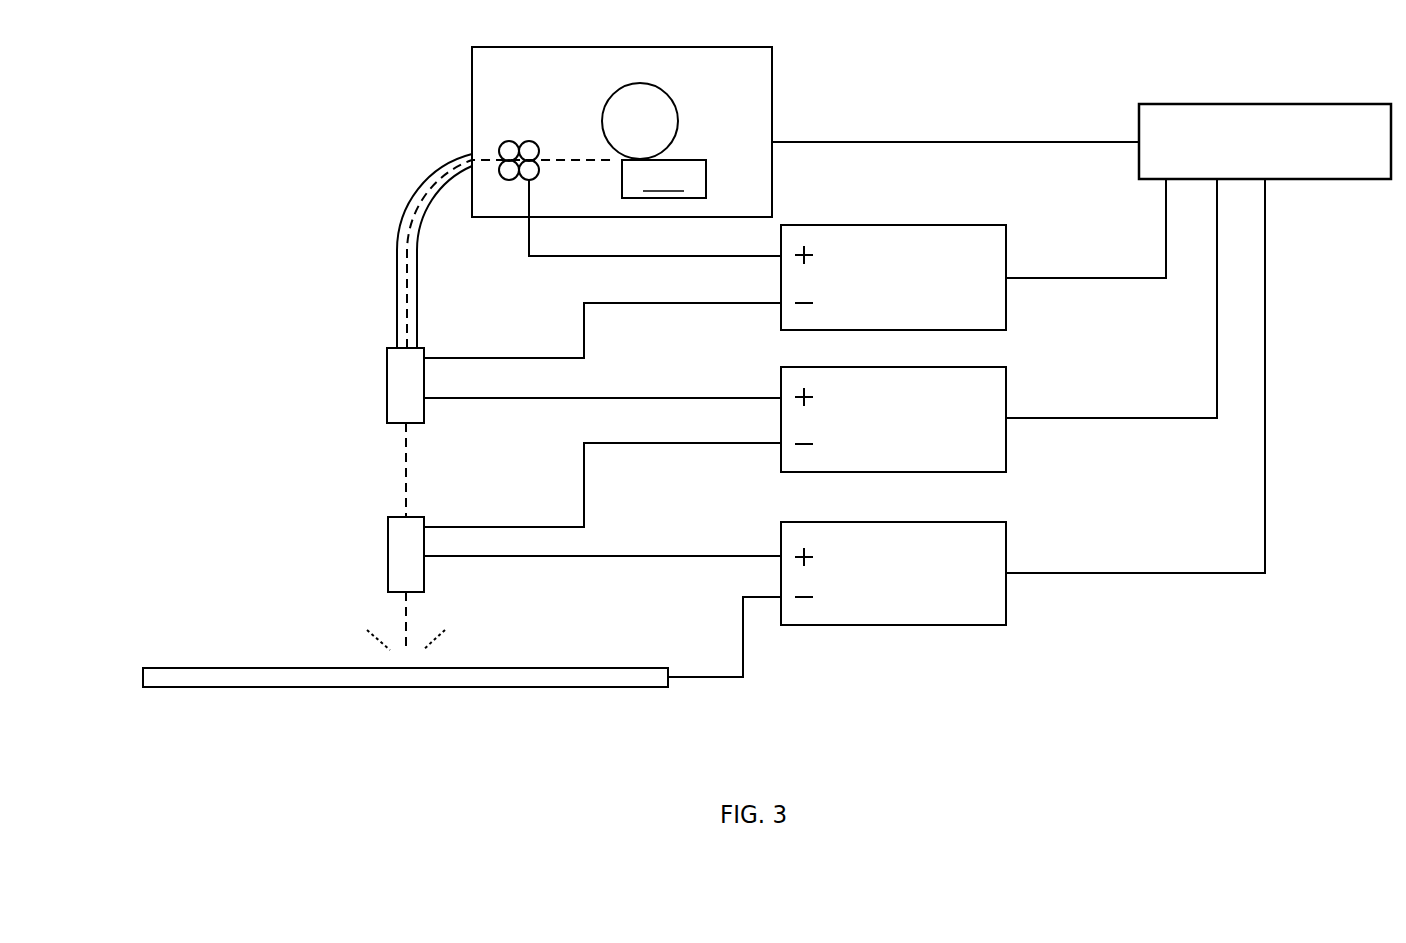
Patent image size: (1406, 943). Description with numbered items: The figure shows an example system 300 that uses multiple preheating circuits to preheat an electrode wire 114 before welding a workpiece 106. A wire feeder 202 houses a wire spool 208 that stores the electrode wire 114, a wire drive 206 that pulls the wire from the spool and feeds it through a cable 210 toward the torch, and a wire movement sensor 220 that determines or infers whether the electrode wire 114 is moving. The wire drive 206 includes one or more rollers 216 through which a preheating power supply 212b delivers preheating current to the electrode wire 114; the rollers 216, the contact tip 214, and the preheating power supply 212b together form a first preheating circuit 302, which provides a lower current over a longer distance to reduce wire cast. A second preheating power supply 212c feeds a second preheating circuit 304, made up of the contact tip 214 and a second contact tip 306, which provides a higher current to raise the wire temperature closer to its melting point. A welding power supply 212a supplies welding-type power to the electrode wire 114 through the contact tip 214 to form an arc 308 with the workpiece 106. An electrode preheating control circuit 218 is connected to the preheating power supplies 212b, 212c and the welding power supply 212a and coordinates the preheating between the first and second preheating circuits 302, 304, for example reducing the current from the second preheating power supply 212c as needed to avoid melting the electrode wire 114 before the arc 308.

The system 300 is at (156, 62).
The first preheating circuit 302 is at (314, 210).
The second preheating circuit 304 is at (314, 408).
The workpiece 106 is at (143, 687).
The electrode wire 114 is at (406, 297).
The wire feeder 202 is at (472, 47).
The wire drive 206 is at (532, 112).
The wire spool 208 is at (678, 125).
The cable 210 is at (410, 205).
The welding power supply 212a is at (1006, 522).
The preheating power supply 212b is at (1006, 225).
The second preheating power supply 212c is at (1006, 367).
The contact tip 214 is at (387, 348).
The roller 216 is at (532, 178).
The electrode preheating control circuit 218 is at (1139, 104).
The wire movement sensor 220 is at (664, 179).
The second contact tip 306 is at (388, 543).
The arc 308 is at (378, 637).